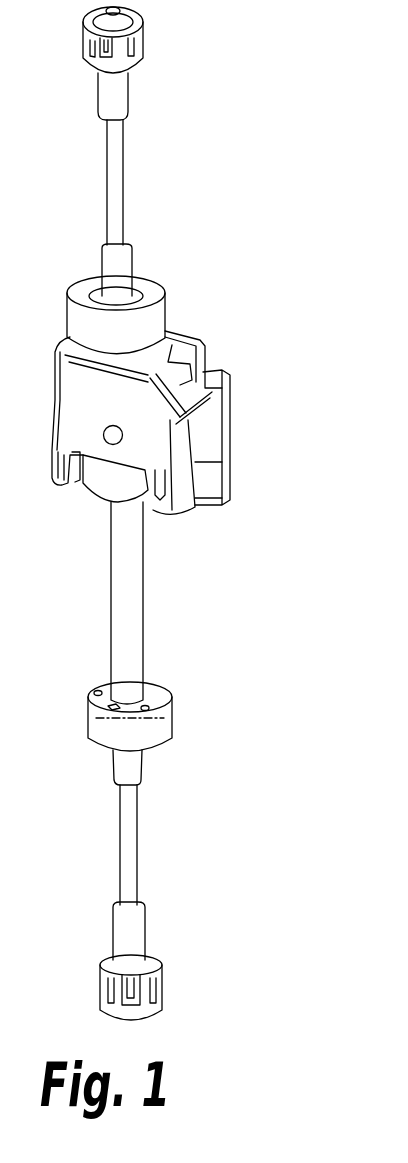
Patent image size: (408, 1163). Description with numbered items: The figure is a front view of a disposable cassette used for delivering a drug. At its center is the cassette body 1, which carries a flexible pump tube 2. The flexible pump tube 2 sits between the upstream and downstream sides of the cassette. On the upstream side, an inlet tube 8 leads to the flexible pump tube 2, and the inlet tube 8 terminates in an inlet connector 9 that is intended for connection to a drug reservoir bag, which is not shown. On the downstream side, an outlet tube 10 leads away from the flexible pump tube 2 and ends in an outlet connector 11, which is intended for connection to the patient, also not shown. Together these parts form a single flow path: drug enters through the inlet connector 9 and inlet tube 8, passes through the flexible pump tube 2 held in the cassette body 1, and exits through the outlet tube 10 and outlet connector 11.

The cassette body 1 is at (238, 418).
The flexible pump tube 2 is at (127, 623).
The inlet tube 8 is at (128, 847).
The inlet connector 9 is at (130, 940).
The outlet tube 10 is at (115, 197).
The outlet connector 11 is at (115, 105).